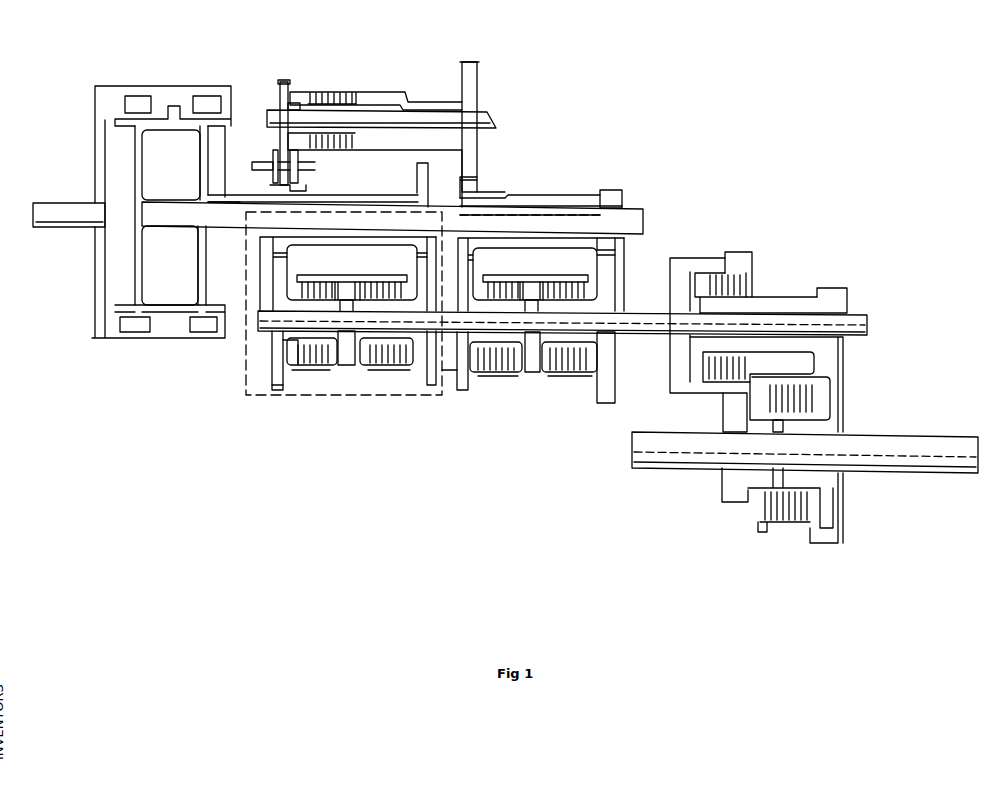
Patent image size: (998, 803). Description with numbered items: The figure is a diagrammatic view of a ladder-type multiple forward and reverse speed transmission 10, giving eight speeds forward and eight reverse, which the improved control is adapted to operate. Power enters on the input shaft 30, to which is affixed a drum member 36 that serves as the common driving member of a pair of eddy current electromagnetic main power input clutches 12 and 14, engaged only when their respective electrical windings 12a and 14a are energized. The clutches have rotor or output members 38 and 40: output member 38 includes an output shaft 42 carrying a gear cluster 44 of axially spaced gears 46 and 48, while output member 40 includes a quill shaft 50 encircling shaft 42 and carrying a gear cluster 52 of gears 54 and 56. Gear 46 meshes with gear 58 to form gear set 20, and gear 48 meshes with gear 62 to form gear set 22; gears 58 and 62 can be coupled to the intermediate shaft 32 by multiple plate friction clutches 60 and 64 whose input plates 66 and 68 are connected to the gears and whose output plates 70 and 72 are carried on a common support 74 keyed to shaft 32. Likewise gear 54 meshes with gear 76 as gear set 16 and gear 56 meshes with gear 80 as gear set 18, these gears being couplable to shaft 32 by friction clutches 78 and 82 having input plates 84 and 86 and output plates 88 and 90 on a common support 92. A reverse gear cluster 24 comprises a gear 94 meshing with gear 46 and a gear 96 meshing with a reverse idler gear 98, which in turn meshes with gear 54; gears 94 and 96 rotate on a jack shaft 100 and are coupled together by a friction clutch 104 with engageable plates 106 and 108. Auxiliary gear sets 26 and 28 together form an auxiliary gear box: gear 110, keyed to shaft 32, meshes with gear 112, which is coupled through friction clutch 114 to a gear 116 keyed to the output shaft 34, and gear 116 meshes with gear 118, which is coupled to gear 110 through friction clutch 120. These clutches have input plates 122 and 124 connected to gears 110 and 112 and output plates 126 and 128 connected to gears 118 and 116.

The multiple forward and reverse speed transmission 10 is at (516, 160).
The main power input clutch 12 is at (120, 288).
The electrical winding 12a is at (122, 103).
The main power input clutch 14 is at (190, 292).
The electrical winding 14a is at (207, 99).
The gear set 16 is at (295, 257).
The gear set 18 is at (403, 270).
The gear set 20 is at (484, 262).
The gear set 22 is at (619, 257).
The reverse gear cluster 24 is at (380, 92).
The auxiliary gear set 26 is at (855, 357).
The auxiliary gear set 28 is at (670, 402).
The input shaft 30 is at (56, 205).
The intermediate shaft 32 is at (626, 320).
The output shaft 34 is at (917, 456).
The drum member 36 is at (132, 86).
The rotor or output member 38 is at (143, 152).
The rotor or output member 40 is at (200, 172).
The output shaft 42 is at (392, 218).
The gear cluster 44 is at (520, 197).
The gear 46 is at (472, 190).
The gear 48 is at (622, 190).
The quill shaft 50 is at (220, 237).
The gear cluster 52 is at (345, 200).
The gear 54 is at (300, 190).
The gear 56 is at (418, 178).
The gear 58 is at (483, 278).
The friction clutch 60 is at (495, 373).
The gear 62 is at (620, 270).
The friction clutch 64 is at (568, 364).
The input plates 66 is at (455, 372).
The input plates 68 is at (606, 355).
The output plates 70 is at (515, 372).
The output plates 72 is at (535, 374).
The common support 74 is at (534, 287).
The gear 76 is at (275, 380).
The friction clutch 78 is at (305, 358).
The gear 80 is at (426, 347).
The friction clutch 82 is at (377, 362).
The input plates 84 is at (283, 343).
The input plates 86 is at (370, 358).
The output plates 88 is at (322, 368).
The output plates 90 is at (395, 368).
The common support 92 is at (345, 358).
The gear 94 is at (480, 83).
The gear 96 is at (281, 95).
The reverse idler gear 98 is at (273, 160).
The jack shaft 100 is at (498, 116).
The friction clutch 104 is at (323, 95).
The engageable plates 106 is at (336, 150).
The engageable plates 108 is at (347, 100).
The gear 110 is at (833, 292).
The gear 112 is at (831, 377).
The friction clutch 114 is at (765, 506).
The gear 116 is at (740, 410).
The gear 118 is at (740, 256).
The friction clutch 120 is at (717, 278).
The input plates 122 is at (752, 289).
The input plates 124 is at (773, 512).
The output plates 126 is at (752, 284).
The output plates 128 is at (785, 512).